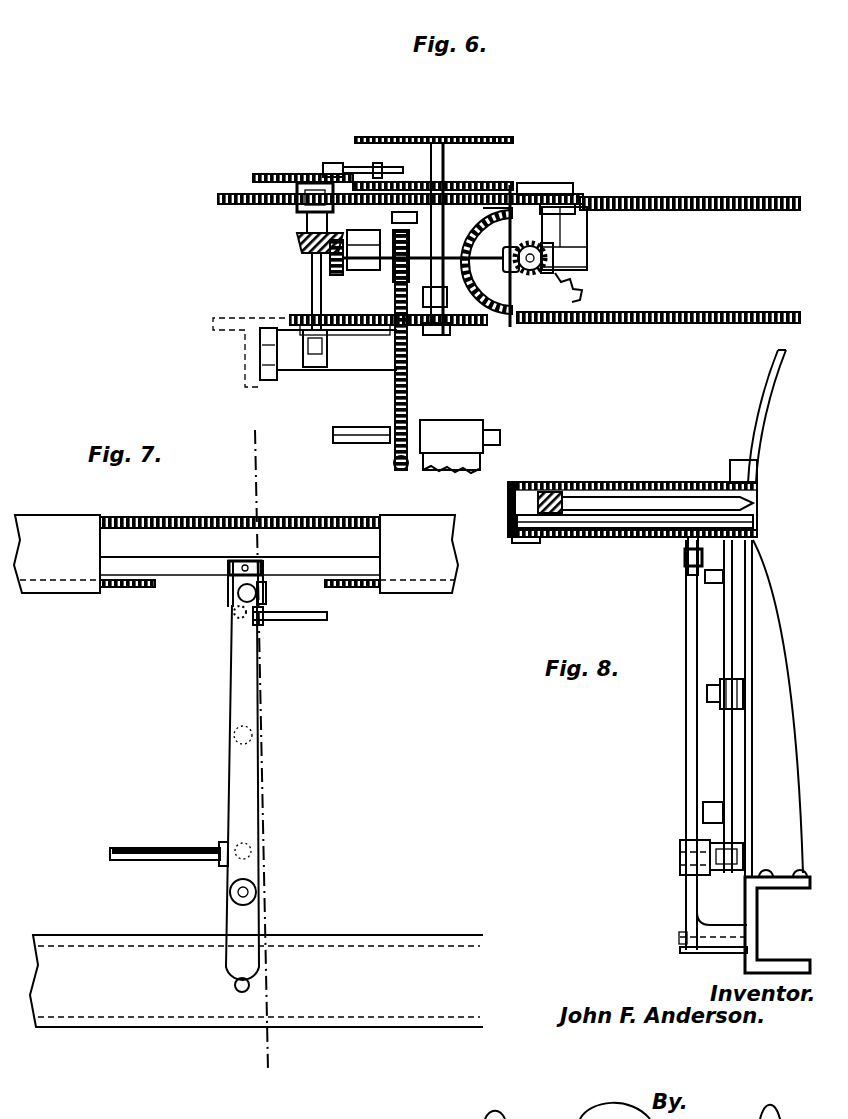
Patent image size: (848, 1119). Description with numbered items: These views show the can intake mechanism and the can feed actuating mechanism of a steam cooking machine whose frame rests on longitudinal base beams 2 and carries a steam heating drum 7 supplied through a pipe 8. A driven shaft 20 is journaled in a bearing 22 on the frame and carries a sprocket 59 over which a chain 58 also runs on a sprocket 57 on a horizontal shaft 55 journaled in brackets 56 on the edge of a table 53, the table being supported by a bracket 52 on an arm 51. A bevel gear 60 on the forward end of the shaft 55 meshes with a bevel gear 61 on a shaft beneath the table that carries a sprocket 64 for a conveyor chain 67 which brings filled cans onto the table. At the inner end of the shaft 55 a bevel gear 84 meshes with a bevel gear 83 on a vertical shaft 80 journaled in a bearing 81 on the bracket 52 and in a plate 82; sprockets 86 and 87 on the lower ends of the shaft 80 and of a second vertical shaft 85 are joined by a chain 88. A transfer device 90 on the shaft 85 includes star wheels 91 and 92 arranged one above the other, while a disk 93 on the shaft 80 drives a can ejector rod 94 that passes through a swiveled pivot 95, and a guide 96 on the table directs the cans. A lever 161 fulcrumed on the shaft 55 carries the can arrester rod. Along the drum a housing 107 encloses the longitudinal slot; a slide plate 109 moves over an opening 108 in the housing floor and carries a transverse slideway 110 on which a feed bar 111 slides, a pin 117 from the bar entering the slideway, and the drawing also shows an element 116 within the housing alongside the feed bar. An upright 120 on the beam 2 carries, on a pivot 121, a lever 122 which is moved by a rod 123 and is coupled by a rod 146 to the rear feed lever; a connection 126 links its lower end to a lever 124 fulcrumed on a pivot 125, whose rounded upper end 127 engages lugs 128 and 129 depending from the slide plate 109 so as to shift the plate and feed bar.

In FIG. 7, the longitudinal base beam 2 is at (143, 993).
In FIG. 8, the longitudinal base beam 2 is at (752, 937).
In FIG. 8, the steam heating drum 7 is at (762, 433).
In FIG. 7, the pipe 8 is at (260, 747).
In FIG. 6, the driven shaft 20 is at (497, 436).
In FIG. 6, the bearing 22 is at (452, 438).
In FIG. 6, the arm 51 is at (245, 359).
In FIG. 6, the bracket 52 is at (367, 353).
In FIG. 6, the table 53 is at (487, 184).
In FIG. 6, the horizontal shaft 55 is at (453, 256).
In FIG. 6, the brackets 56 is at (576, 247).
In FIG. 6, the sprocket 57 is at (409, 236).
In FIG. 6, the chain 58 is at (408, 400).
In FIG. 6, the sprocket 59 is at (394, 462).
In FIG. 6, the bevel gear 60 is at (546, 275).
In FIG. 6, the bevel gear 61 is at (530, 273).
In FIG. 6, the sprocket 64 is at (573, 293).
In FIG. 6, the conveyor chain 67 is at (723, 200).
In FIG. 6, the vertical shaft 80 is at (322, 301).
In FIG. 6, the bearing 81 is at (328, 351).
In FIG. 6, the plate 82 is at (300, 195).
In FIG. 6, the bevel gear 83 is at (303, 243).
In FIG. 6, the bevel gear 84 is at (328, 262).
In FIG. 6, the vertical shaft 85 is at (447, 137).
In FIG. 6, the sprocket 86 is at (302, 333).
In FIG. 6, the sprocket 87 is at (469, 327).
In FIG. 6, the chain 88 is at (437, 336).
In FIG. 6, the transfer device 90 is at (460, 239).
In FIG. 6, the star wheel 91 is at (502, 193).
In FIG. 6, the star wheel 92 is at (505, 137).
In FIG. 6, the disk 93 is at (258, 176).
In FIG. 6, the can ejector rod 94 is at (352, 167).
In FIG. 6, the swiveled pivot 95 is at (377, 165).
In FIG. 6, the guide 96 is at (560, 185).
In FIG. 7, the housing 107 is at (45, 536).
In FIG. 8, the housing 107 is at (660, 483).
In FIG. 7, the opening 108 is at (177, 585).
In FIG. 8, the opening 108 is at (591, 540).
In FIG. 7, the slide plate 109 is at (314, 586).
In FIG. 8, the slide plate 109 is at (655, 539).
In FIG. 7, the transverse slideway 110 is at (229, 571).
In FIG. 8, the transverse slideway 110 is at (571, 524).
In FIG. 7, the feed bar 111 is at (190, 540).
In FIG. 8, the feed bar 111 is at (565, 492).
In FIG. 8, the pointed rod 116 is at (690, 506).
In FIG. 7, the pin 117 is at (263, 570).
In FIG. 8, the pin 117 is at (519, 541).
In FIG. 8, the upright 120 is at (751, 743).
In FIG. 8, the pivot 121 is at (742, 685).
In FIG. 8, the lever 122 is at (727, 758).
In FIG. 7, the rod 123 is at (170, 859).
In FIG. 8, the rod 123 is at (708, 823).
In FIG. 7, the lever 124 is at (243, 781).
In FIG. 8, the lever 124 is at (696, 711).
In FIG. 7, the pivot 125 is at (241, 991).
In FIG. 8, the pivot 125 is at (680, 941).
In FIG. 8, the connection 126 is at (695, 869).
In FIG. 7, the rounded upper end 127 is at (238, 618).
In FIG. 8, the rounded upper end 127 is at (690, 569).
In FIG. 7, the lug 128 is at (241, 601).
In FIG. 7, the lug 129 is at (265, 594).
In FIG. 8, the lug 129 is at (699, 557).
In FIG. 8, the rod 146 is at (708, 588).
In FIG. 6, the lever 161 is at (558, 205).